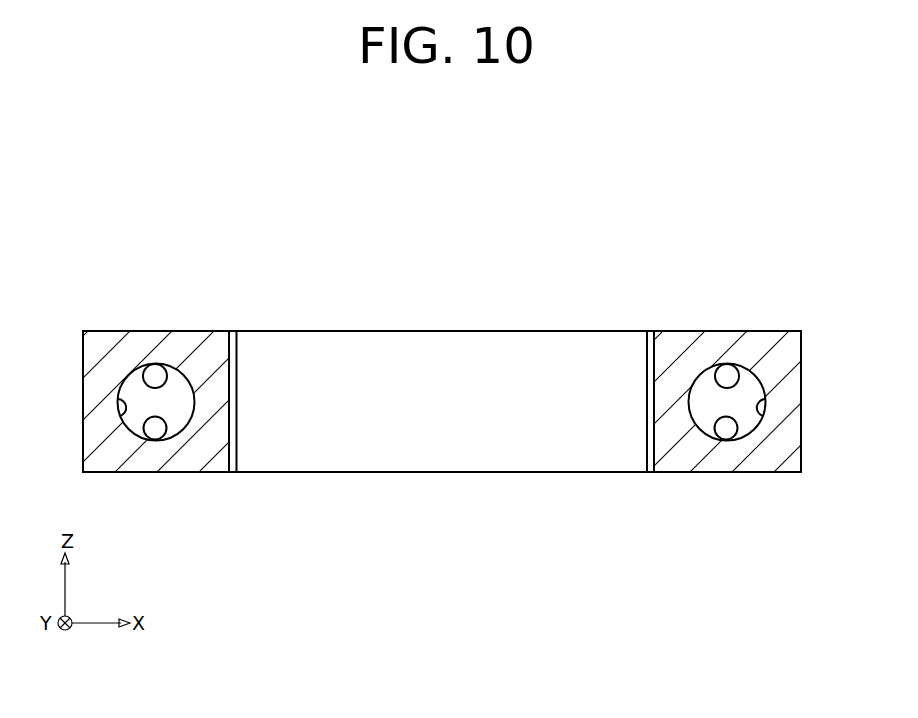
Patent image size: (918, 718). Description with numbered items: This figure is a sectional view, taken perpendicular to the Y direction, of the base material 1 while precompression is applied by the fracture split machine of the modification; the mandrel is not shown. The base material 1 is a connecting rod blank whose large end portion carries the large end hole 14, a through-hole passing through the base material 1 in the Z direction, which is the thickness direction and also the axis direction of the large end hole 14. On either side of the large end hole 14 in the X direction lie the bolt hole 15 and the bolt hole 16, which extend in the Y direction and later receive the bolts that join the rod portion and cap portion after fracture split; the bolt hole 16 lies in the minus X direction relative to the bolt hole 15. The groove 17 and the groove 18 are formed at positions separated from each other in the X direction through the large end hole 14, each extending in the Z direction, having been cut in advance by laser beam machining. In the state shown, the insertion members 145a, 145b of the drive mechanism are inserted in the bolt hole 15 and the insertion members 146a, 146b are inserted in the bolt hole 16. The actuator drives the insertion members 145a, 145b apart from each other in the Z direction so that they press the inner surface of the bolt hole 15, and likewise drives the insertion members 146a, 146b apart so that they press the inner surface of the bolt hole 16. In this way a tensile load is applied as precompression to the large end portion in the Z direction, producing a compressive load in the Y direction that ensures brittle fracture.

The base material 1 is at (459, 408).
The large end hole 14 is at (320, 423).
The bolt hole 15 is at (758, 410).
The bolt hole 16 is at (122, 417).
The groove 17 is at (647, 377).
The groove 18 is at (230, 367).
The insertion member 145a is at (724, 373).
The insertion member 145b is at (725, 432).
The insertion member 146a is at (156, 375).
The insertion member 146b is at (156, 430).